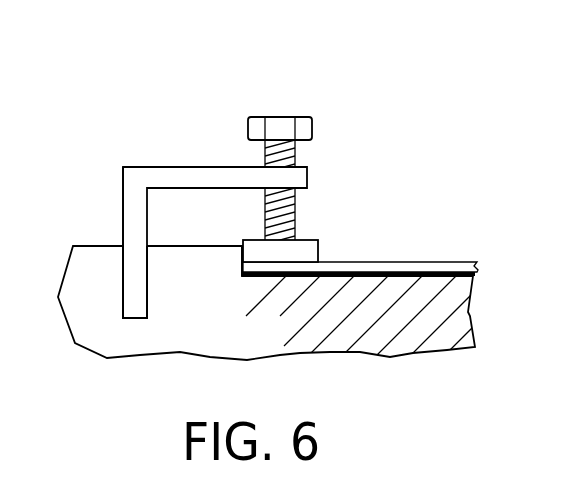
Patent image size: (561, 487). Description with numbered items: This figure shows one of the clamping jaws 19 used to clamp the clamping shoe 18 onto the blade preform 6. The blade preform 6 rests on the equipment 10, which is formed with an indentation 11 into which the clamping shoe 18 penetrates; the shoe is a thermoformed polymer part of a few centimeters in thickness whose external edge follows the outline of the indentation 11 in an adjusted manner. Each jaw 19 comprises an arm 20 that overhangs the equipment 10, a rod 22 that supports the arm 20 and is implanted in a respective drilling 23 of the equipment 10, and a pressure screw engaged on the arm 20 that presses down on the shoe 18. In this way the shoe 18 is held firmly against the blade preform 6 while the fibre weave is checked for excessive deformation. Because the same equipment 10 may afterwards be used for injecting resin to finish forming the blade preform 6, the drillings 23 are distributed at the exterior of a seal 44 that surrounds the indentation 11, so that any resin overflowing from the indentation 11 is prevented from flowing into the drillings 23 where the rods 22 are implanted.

The blade preform 6 is at (440, 262).
The equipment 10 is at (400, 335).
The indentation 11 is at (247, 253).
The clamping shoe 18 is at (318, 250).
The jaws 19 is at (212, 118).
The arm 20 is at (157, 166).
The rod 22 is at (122, 198).
The drilling 23 is at (125, 280).
The seal 44 is at (330, 116).